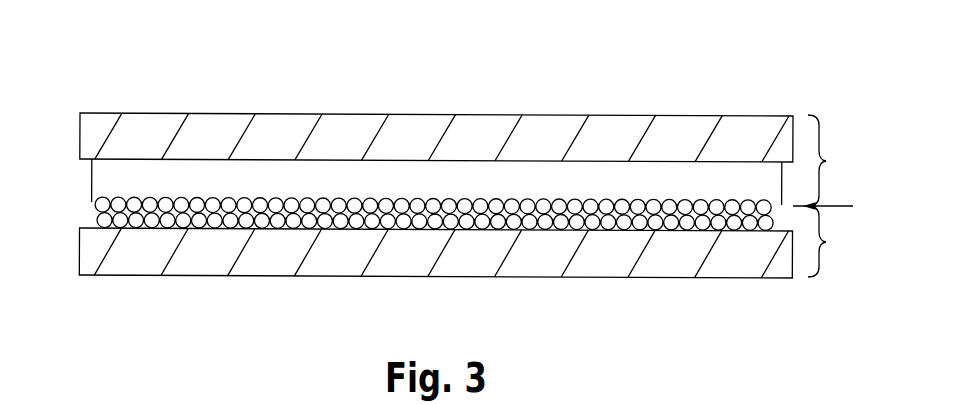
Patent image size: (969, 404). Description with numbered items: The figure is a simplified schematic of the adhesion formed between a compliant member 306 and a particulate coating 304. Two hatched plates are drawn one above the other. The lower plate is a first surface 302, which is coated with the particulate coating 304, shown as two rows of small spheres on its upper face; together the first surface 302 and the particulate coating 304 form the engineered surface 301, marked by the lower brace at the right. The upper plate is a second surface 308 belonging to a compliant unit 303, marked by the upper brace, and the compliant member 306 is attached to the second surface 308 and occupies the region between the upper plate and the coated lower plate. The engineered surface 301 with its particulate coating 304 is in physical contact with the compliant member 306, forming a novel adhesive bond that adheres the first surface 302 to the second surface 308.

The engineered surface 301 is at (446, 252).
The first surface 302 is at (153, 265).
The compliant unit 303 is at (475, 122).
The particulate coating 304 is at (100, 207).
The compliant member 306 is at (312, 175).
The second surface 308 is at (150, 132).